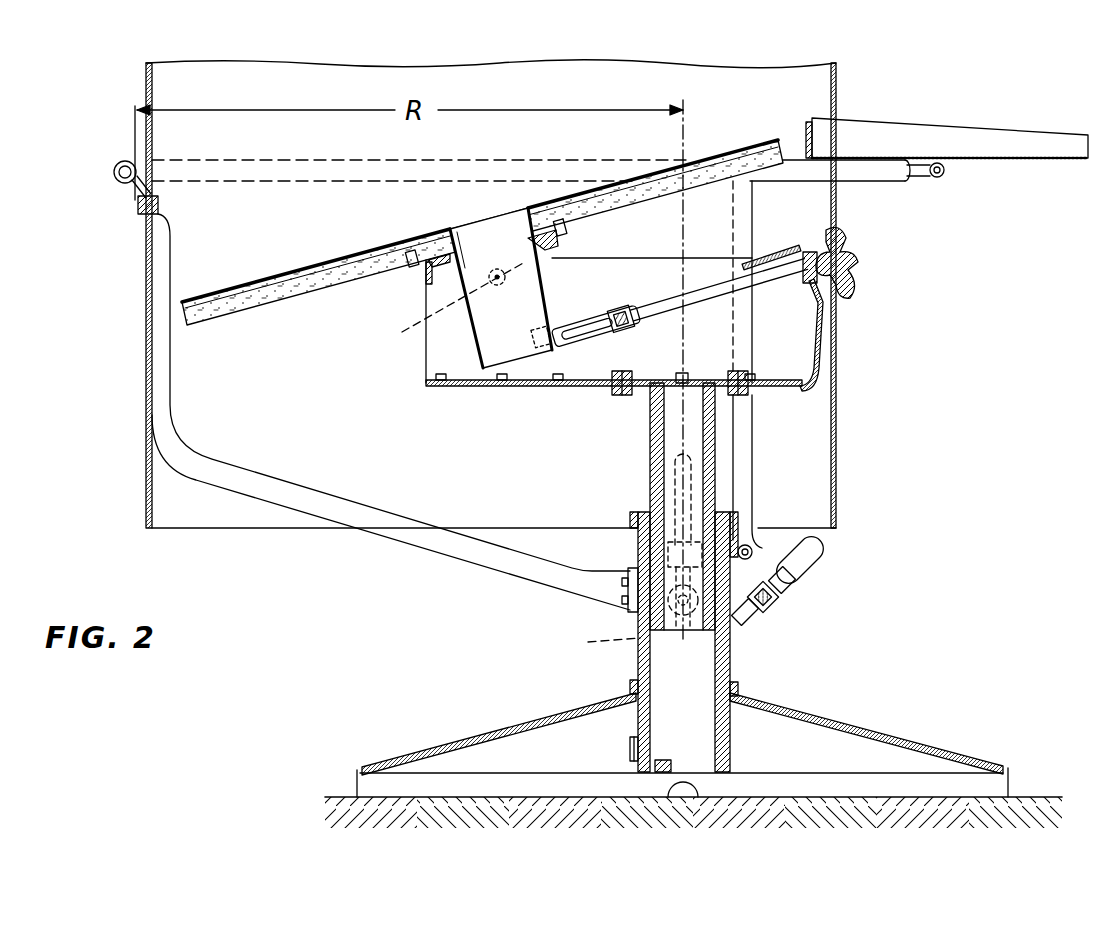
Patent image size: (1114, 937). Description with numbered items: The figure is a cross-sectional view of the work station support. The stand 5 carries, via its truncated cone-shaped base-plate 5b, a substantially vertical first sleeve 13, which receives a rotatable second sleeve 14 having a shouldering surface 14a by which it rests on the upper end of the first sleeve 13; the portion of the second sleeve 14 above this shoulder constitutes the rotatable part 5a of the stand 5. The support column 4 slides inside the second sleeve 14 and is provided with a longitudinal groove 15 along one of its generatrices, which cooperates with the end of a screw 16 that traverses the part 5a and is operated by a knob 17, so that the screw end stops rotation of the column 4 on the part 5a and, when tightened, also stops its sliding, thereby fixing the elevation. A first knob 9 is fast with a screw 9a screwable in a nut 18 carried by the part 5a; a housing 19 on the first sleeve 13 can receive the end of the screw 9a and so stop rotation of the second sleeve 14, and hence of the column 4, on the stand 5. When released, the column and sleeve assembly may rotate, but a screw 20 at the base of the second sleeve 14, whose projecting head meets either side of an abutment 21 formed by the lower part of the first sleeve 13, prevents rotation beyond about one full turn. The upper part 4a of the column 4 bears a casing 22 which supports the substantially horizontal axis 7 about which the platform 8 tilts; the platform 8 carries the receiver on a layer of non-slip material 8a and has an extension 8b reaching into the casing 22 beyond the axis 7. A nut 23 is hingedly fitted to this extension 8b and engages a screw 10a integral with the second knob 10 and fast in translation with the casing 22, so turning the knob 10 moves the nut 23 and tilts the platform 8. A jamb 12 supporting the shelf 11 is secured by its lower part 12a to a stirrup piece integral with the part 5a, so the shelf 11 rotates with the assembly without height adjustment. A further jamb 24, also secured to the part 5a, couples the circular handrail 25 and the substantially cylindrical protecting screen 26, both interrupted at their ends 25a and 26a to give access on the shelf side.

The support column 4 is at (640, 497).
The upper part of the column 4a is at (650, 410).
The stand 5 is at (625, 672).
The rotatable part of the stand 5a is at (735, 582).
The truncated cone-shaped base-plate 5b is at (472, 738).
The horizontal axis 7 is at (472, 292).
The platform 8 is at (318, 292).
The layer of non-slip material 8a is at (325, 262).
The extension of the platform 8b is at (507, 341).
The first knob 9 is at (816, 580).
The screw 9a is at (772, 600).
The second knob 10 is at (846, 266).
The screw 10a is at (660, 308).
The shelf 11 is at (975, 140).
The jamb 12 is at (754, 415).
The lower part of the jamb 12a is at (750, 546).
The first sleeve 13 is at (682, 762).
The second sleeve 14 is at (652, 695).
The shouldering surface 14a is at (628, 608).
The longitudinal groove 15 is at (670, 472).
The screw 16 is at (690, 622).
The knob 17 is at (598, 643).
The nut 18 is at (770, 608).
The housing 19 is at (749, 624).
The screw 20 is at (668, 764).
The abutment 21 is at (630, 748).
The casing 22 is at (432, 368).
The nut 23 is at (612, 314).
The jamb 24 is at (430, 516).
The circular handrail 25 is at (122, 162).
The end of the handrail 25a is at (945, 176).
The screen 26 is at (149, 320).
The end of the screen 26a is at (838, 202).